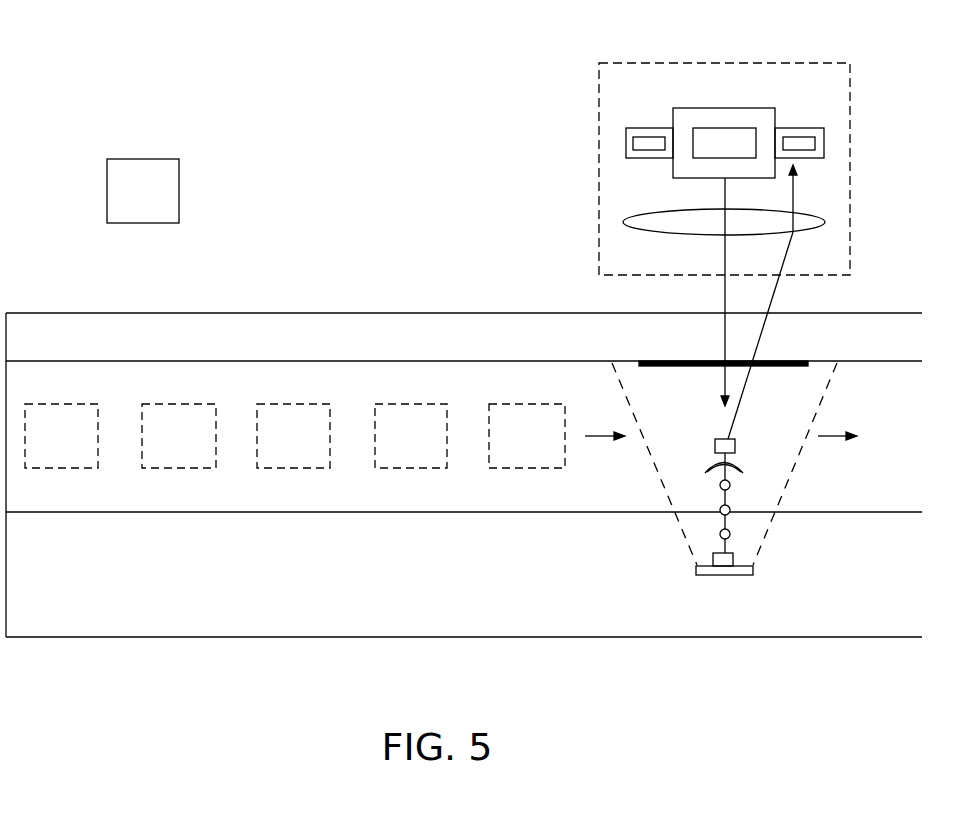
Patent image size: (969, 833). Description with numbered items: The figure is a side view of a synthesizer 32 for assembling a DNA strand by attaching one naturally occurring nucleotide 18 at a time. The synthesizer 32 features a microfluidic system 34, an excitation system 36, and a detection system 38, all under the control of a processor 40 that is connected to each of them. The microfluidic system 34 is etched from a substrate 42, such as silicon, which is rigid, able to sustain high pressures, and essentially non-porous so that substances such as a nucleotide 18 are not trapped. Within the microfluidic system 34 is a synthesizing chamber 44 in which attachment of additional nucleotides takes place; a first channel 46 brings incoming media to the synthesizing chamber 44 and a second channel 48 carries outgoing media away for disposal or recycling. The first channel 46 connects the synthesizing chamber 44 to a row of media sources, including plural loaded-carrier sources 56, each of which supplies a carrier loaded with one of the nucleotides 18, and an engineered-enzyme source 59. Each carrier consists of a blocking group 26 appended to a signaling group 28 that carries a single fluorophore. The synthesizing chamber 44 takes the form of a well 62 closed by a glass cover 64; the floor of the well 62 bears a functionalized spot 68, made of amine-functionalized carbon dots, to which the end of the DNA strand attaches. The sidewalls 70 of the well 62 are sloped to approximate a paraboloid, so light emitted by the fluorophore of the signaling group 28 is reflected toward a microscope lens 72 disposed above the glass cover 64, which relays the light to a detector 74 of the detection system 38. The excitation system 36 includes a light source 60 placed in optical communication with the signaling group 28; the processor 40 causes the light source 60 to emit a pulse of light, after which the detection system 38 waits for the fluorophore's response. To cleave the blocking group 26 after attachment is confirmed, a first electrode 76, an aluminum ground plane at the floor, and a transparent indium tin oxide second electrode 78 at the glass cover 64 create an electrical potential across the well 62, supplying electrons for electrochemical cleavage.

The nucleotide 18 is at (731, 508).
The blocking group 26 is at (705, 474).
The signaling group 28 is at (726, 439).
The synthesizer 32 is at (370, 238).
The microfluidic system 34 is at (463, 637).
The excitation system 36 is at (758, 108).
The detection system 38 is at (625, 132).
The processor 40 is at (156, 204).
The substrate 42 is at (370, 576).
The synthesizing chamber 44 is at (680, 409).
The first channel 46 is at (365, 448).
The second channel 48 is at (913, 447).
The loaded-carrier source 56 is at (74, 447).
The engineered-enzyme source 59 is at (540, 447).
The light source 60 is at (709, 128).
The well 62 is at (703, 451).
The glass cover 64 is at (913, 351).
The functionalized spot 68 is at (735, 556).
The sidewalls 70 is at (772, 527).
The microscope lens 72 is at (623, 222).
The detector 74 is at (633, 145).
The first electrode 76 is at (725, 576).
The second electrode 78 is at (779, 361).